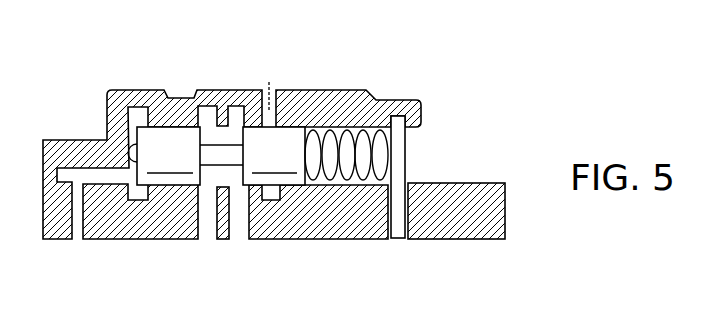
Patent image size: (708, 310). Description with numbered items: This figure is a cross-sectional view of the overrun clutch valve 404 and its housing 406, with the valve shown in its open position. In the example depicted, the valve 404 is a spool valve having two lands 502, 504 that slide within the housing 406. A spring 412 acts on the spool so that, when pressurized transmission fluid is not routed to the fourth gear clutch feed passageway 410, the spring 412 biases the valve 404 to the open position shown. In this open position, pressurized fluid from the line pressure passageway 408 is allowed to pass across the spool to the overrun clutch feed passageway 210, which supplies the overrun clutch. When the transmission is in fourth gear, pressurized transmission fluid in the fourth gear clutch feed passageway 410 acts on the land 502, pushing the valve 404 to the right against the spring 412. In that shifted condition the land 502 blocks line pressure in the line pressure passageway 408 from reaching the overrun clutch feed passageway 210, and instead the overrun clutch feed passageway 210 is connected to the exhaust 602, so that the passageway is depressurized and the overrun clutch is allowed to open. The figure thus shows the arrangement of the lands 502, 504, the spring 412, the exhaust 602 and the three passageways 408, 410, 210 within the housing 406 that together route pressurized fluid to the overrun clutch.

The overrun clutch valve 404 is at (85, 50).
The housing 406 is at (321, 90).
The spring 412 is at (384, 132).
The exhaust 602 is at (268, 57).
The land 502 is at (160, 146).
The land 504 is at (287, 176).
The fourth gear clutch feed passageway 410 is at (77, 243).
The line pressure passageway 408 is at (203, 243).
The overrun clutch feed passageway 210 is at (238, 243).